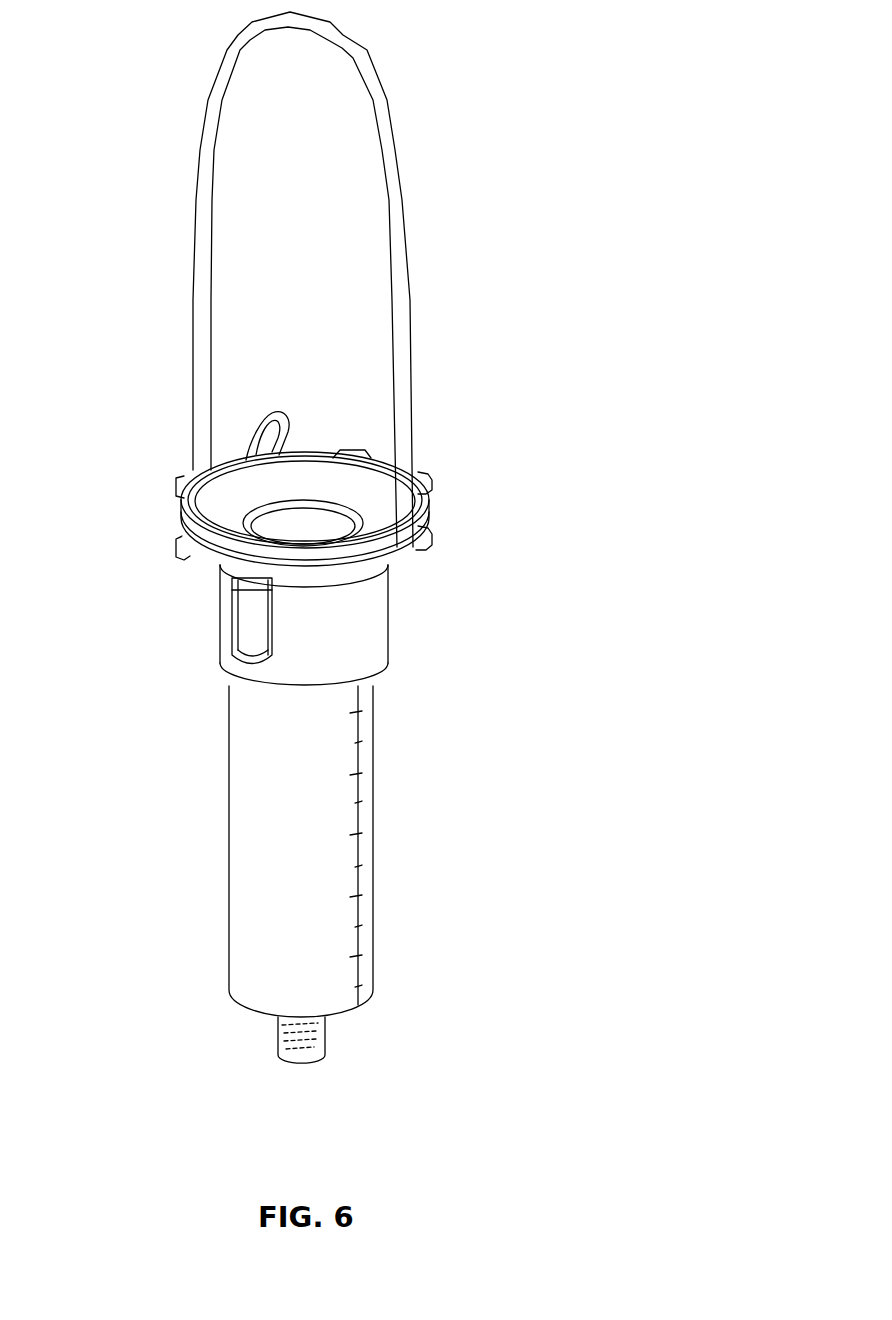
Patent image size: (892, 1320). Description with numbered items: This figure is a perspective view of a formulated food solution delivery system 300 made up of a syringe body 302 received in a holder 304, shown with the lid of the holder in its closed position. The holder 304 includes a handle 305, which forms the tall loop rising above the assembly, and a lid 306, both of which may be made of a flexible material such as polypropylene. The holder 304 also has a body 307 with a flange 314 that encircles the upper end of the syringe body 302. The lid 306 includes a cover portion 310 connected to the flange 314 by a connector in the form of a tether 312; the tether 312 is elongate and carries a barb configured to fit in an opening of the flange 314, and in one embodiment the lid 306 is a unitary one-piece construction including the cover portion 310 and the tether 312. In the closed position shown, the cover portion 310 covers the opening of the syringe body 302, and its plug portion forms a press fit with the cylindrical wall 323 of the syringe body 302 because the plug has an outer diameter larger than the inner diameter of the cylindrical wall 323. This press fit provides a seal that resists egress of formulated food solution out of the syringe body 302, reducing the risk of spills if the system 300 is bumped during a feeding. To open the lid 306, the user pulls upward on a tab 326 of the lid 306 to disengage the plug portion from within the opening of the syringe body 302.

The formulated food solution delivery system 300 is at (513, 83).
The syringe body 302 is at (340, 887).
The holder 304 is at (377, 608).
The handle 305 is at (397, 268).
The lid 306 is at (222, 512).
The body 307 is at (377, 647).
The cover portion 310 is at (375, 488).
The tether 312 is at (277, 410).
The flange 314 is at (178, 516).
The cylindrical wall 323 is at (370, 773).
The tab 326 is at (430, 530).